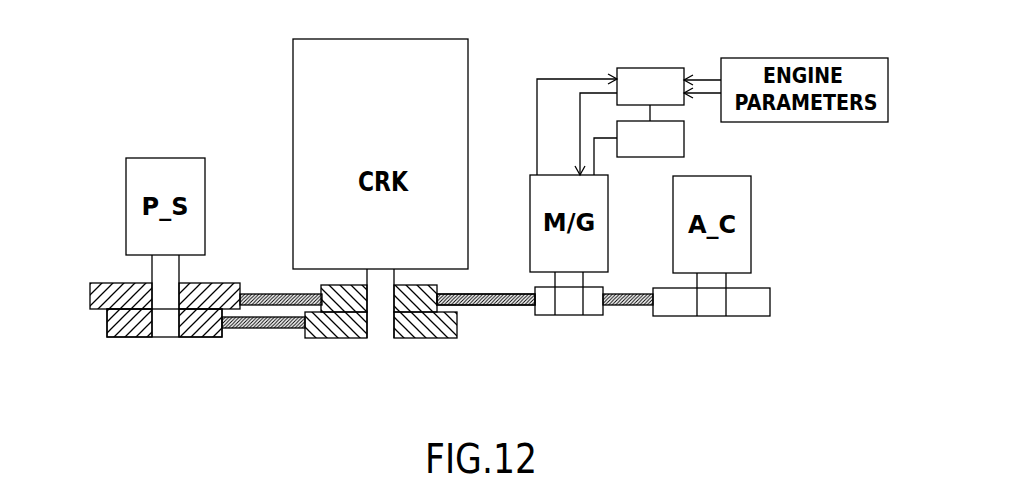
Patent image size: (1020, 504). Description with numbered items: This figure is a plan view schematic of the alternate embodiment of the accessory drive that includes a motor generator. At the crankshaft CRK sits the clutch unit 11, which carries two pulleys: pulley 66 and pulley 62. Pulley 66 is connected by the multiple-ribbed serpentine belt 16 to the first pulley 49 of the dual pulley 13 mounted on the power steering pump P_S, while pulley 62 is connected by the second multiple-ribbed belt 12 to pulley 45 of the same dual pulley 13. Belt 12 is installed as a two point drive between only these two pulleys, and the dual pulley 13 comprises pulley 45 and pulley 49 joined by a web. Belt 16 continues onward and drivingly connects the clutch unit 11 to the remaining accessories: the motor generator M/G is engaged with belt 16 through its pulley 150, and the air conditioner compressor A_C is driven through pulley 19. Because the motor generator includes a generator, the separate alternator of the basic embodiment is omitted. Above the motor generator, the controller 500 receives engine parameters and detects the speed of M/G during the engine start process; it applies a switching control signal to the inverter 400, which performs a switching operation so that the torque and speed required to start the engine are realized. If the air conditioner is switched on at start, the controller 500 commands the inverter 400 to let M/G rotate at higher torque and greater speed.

The clutch unit 11 is at (442, 340).
The second multiple-ribbed belt 12 is at (263, 330).
The dual pulley 13 is at (127, 340).
The multiple-ribbed serpentine belt 16 is at (507, 306).
The air conditioner compressor pulley 19 is at (751, 319).
The pulley 45 is at (107, 318).
The first pulley 49 is at (90, 293).
The pulley 62 is at (457, 334).
The pulley 66 is at (447, 291).
The motor generator pulley 150 is at (590, 319).
The inverter 400 is at (650, 139).
The controller 500 is at (650, 86).